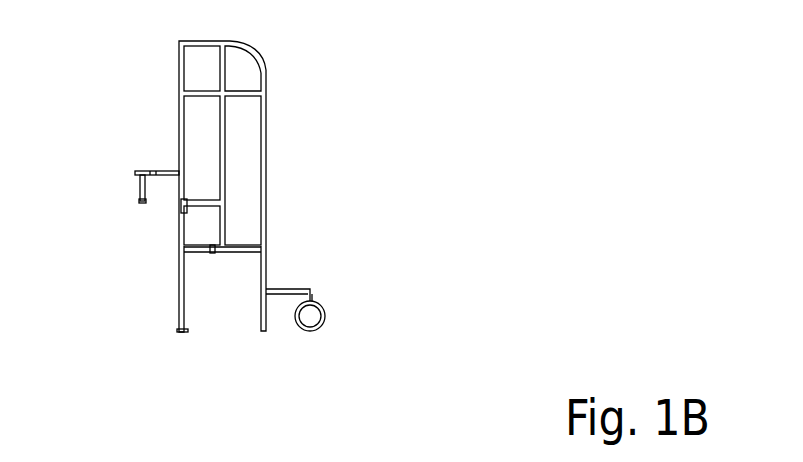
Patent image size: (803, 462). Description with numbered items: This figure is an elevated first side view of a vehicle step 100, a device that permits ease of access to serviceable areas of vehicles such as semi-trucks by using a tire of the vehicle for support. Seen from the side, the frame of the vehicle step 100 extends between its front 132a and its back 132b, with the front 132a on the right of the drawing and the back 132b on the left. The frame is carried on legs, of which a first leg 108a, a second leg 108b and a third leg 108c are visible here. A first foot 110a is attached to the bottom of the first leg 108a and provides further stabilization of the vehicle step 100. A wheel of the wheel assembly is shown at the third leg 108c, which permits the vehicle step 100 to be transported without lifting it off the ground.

The vehicle step 100 is at (363, 74).
The front 132a is at (282, 163).
The back 132b is at (168, 124).
The first leg 108a is at (178, 278).
The second leg 108b is at (262, 331).
The third leg 108c is at (310, 291).
The first foot 110a is at (180, 328).